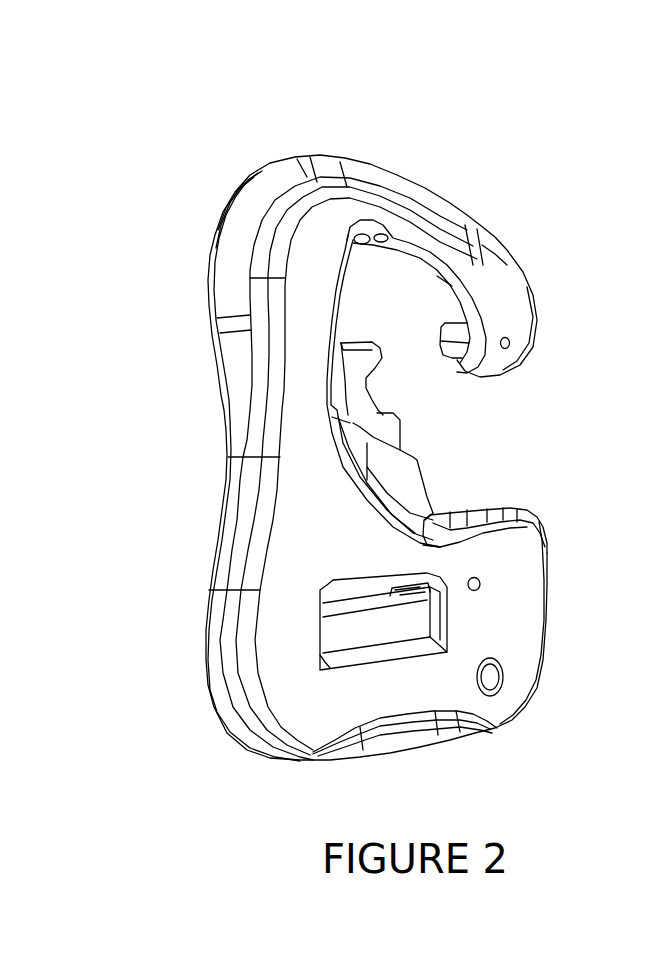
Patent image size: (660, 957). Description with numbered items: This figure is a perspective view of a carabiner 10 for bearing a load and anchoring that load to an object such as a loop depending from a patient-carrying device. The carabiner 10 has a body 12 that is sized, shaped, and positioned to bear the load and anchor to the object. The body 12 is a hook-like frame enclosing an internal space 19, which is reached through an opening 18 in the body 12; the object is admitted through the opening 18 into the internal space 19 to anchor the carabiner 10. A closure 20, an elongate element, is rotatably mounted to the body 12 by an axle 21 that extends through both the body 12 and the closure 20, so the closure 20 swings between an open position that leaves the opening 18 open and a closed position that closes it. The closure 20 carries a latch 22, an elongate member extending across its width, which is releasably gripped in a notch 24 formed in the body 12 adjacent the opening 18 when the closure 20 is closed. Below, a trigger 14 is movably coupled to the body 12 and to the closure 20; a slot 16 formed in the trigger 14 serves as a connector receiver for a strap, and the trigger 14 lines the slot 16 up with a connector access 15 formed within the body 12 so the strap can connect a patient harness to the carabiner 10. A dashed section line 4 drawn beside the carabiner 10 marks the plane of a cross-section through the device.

The section line 4- 4 is at (154, 493).
The carabiner 10 is at (376, 407).
The body 12 is at (362, 432).
The trigger 14 is at (455, 685).
The connector access 15 is at (328, 688).
The slot 16 is at (513, 635).
The opening 18 is at (485, 506).
The internal space 19 is at (416, 296).
The closure 20 is at (427, 466).
The axle 21 is at (545, 551).
The latch 22 is at (385, 391).
The notch 24 is at (445, 325).